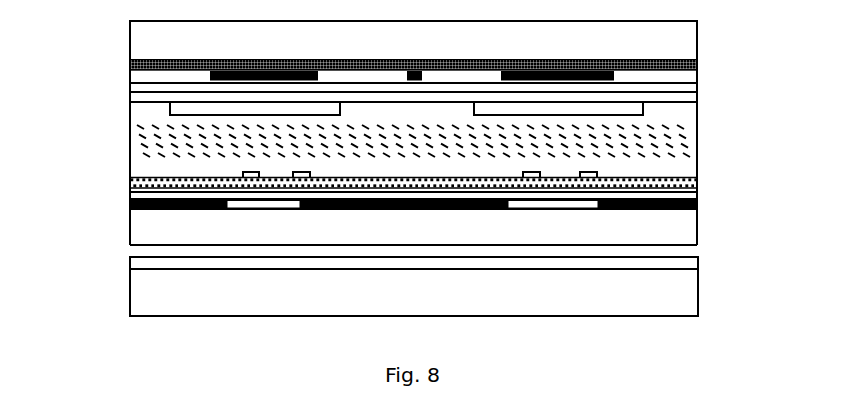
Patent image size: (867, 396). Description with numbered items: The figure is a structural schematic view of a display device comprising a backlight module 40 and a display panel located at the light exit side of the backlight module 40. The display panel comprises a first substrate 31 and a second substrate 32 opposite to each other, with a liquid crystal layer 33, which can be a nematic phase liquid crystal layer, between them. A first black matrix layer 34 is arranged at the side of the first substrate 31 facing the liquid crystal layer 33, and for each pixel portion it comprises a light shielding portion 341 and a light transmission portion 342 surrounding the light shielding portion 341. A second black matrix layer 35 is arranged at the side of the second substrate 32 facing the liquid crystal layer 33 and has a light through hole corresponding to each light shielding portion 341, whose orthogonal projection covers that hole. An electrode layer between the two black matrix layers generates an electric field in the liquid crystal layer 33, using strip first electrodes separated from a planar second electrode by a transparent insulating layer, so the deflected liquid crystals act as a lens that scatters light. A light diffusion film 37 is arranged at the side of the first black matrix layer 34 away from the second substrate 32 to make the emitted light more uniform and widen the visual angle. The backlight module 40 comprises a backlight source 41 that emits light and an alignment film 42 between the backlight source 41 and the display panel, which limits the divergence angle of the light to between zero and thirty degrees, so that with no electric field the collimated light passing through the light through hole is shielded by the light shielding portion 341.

The first substrate 31 is at (688, 42).
The second substrate 32 is at (685, 230).
The liquid crystal layer 33 is at (692, 146).
The first black matrix layer 34 is at (410, 51).
The light shielding portion 341 is at (218, 58).
The light transmission portion 342 is at (172, 75).
The second black matrix layer 35 is at (698, 204).
The light diffusion film 37 is at (697, 64).
The backlight module 40 is at (464, 286).
The backlight source 41 is at (698, 296).
The alignment film 42 is at (698, 262).